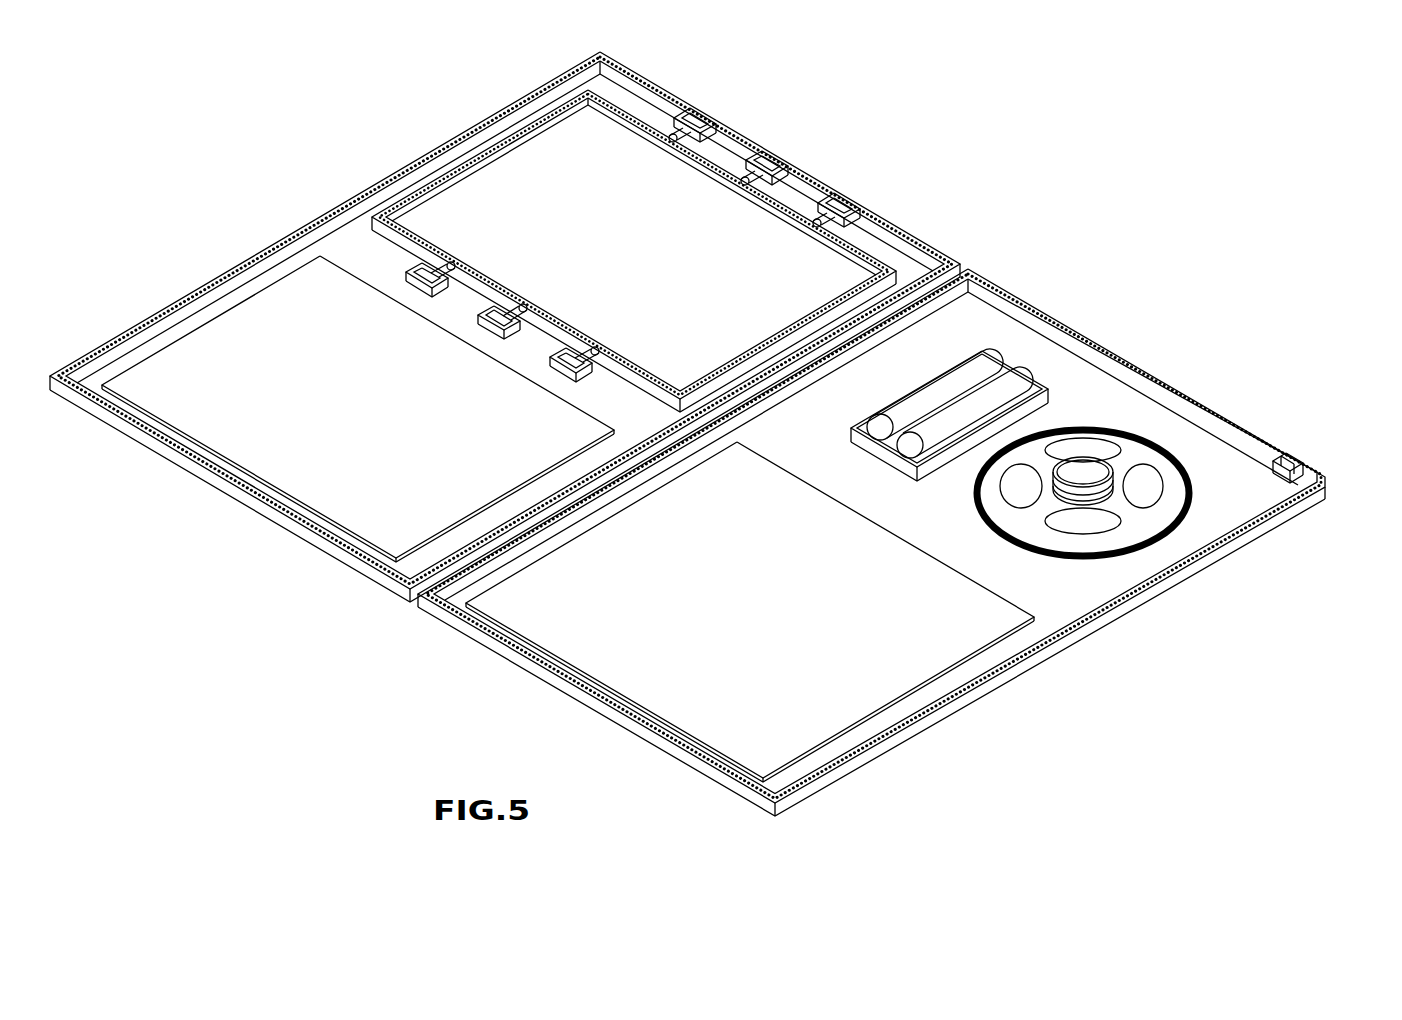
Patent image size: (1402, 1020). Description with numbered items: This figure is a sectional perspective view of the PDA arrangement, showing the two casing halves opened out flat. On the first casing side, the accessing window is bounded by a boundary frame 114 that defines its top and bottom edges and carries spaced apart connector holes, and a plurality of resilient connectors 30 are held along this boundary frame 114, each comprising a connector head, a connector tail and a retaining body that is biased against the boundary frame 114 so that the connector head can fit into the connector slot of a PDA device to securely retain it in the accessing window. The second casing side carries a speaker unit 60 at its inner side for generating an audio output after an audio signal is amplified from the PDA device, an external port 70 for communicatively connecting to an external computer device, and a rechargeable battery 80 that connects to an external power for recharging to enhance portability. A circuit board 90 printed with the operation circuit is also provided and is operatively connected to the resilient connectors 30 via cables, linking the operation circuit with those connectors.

The boundary frame 114 is at (443, 142).
The circuit board 90 is at (247, 293).
The resilient connector 30 is at (802, 230).
The rechargeable battery 80 is at (1035, 373).
The speaker unit 60 is at (1192, 527).
The external port 70 is at (1293, 460).